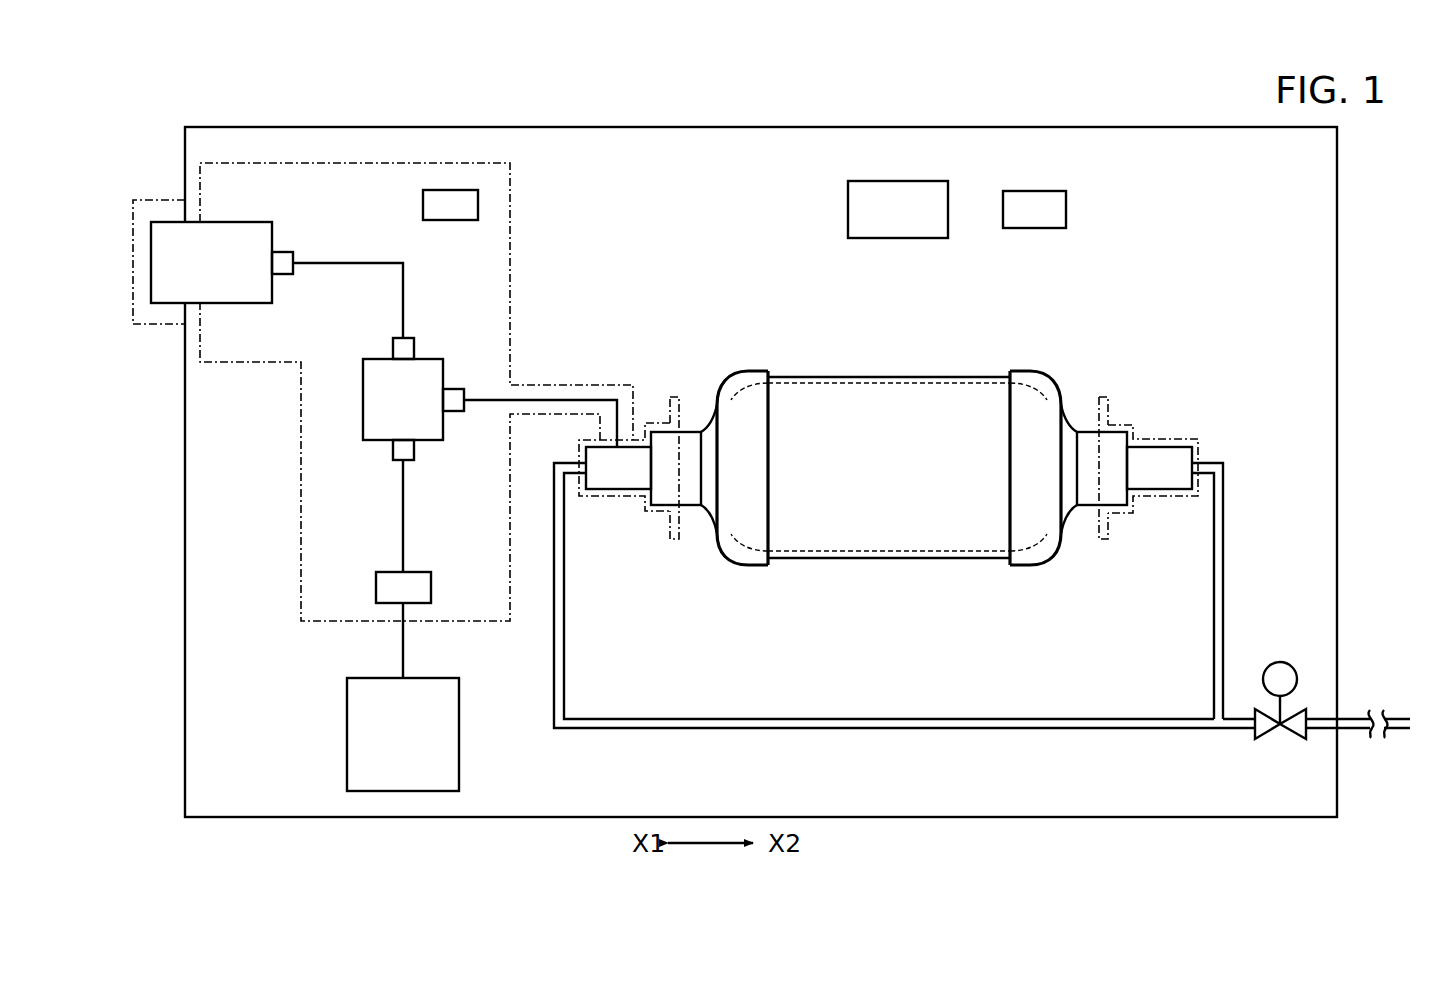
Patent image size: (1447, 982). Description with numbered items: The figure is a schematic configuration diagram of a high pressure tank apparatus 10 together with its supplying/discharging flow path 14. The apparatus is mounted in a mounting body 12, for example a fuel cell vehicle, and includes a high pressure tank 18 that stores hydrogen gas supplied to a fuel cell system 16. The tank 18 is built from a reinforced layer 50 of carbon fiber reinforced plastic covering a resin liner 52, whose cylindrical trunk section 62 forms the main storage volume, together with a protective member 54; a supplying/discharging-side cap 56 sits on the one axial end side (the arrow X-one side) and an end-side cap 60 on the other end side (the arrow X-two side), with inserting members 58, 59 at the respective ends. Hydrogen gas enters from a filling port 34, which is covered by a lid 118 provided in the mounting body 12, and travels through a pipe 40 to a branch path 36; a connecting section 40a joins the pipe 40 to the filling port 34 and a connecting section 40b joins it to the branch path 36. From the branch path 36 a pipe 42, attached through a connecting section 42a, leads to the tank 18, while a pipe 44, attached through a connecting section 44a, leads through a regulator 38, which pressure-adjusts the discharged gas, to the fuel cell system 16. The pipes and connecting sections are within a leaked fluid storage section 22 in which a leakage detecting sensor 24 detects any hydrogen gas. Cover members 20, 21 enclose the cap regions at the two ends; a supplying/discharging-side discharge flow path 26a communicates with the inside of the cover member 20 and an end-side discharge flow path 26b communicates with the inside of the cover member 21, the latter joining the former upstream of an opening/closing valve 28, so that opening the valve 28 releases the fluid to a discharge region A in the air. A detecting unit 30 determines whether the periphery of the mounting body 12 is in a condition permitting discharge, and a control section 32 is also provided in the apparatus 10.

The high pressure tank apparatus 10 is at (1289, 181).
The mounting body 12 is at (1133, 125).
The supplying/discharging flow path 14 is at (349, 243).
The fuel cell system 16 is at (453, 698).
The high pressure tank 18 is at (913, 363).
The cover member 20 is at (670, 530).
The cover member 21 is at (1167, 437).
The leaked fluid storage section 22 is at (512, 190).
The leakage detecting sensor 24 is at (463, 222).
The supplying/discharging-side discharge flow path 26a is at (565, 652).
The end-side discharge flow path 26b is at (1214, 641).
The opening/closing valve 28 is at (1280, 662).
The detecting unit 30 is at (1050, 191).
The control section 32 is at (933, 181).
The filling port 34 is at (163, 305).
The branch path 36 is at (363, 398).
The regulator 38 is at (378, 572).
The pipe 40 is at (338, 263).
The connecting section 40a is at (292, 252).
The connecting section 40b is at (393, 342).
The pipe 42 is at (566, 398).
The connecting section 42a is at (452, 388).
The pipe 44 is at (404, 508).
The connecting section 44a is at (392, 455).
The reinforced layer 50 is at (813, 377).
The liner 52 is at (825, 540).
The protective member 54 is at (742, 372).
The supplying/discharging-side cap 56 is at (690, 428).
The inserting member 58 is at (607, 482).
The inserting member 59 is at (1158, 477).
The end-side cap 60 is at (1112, 430).
The cylindrical trunk section 62 is at (887, 552).
The lid 118 is at (158, 199).